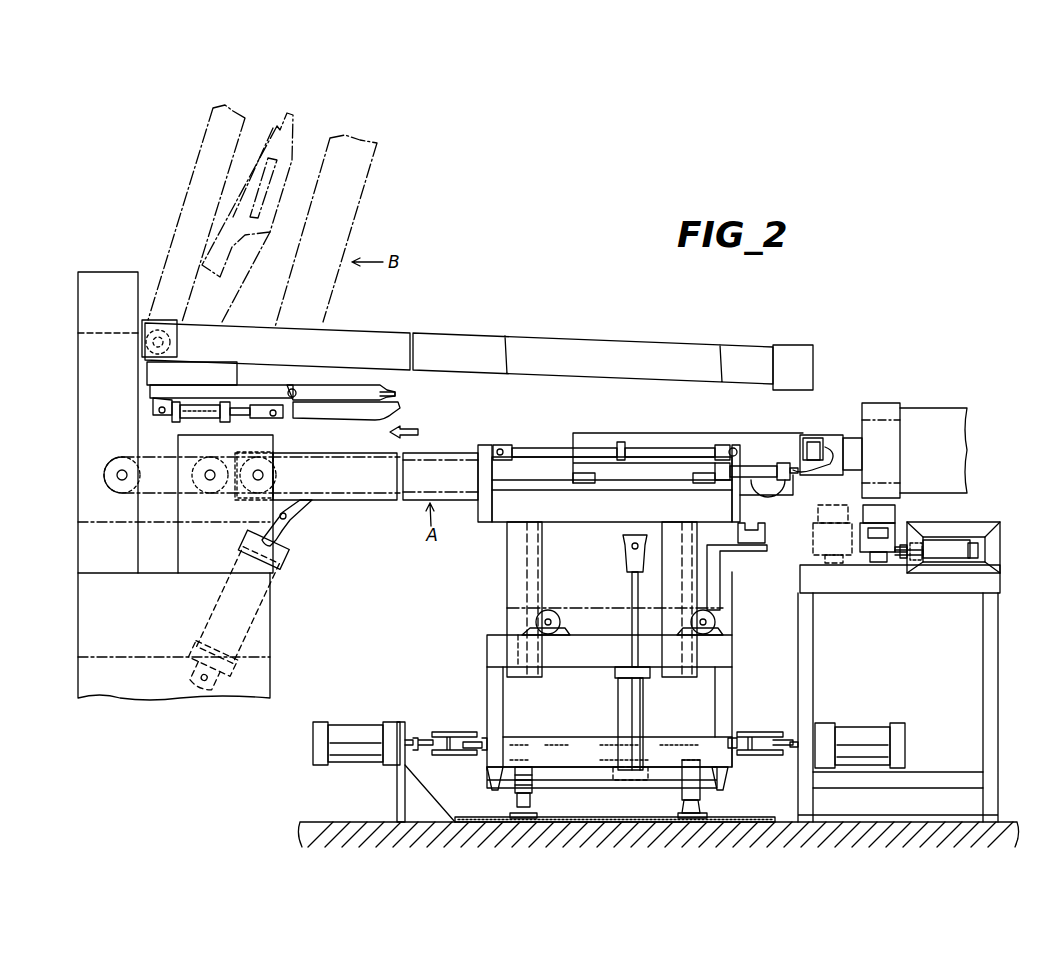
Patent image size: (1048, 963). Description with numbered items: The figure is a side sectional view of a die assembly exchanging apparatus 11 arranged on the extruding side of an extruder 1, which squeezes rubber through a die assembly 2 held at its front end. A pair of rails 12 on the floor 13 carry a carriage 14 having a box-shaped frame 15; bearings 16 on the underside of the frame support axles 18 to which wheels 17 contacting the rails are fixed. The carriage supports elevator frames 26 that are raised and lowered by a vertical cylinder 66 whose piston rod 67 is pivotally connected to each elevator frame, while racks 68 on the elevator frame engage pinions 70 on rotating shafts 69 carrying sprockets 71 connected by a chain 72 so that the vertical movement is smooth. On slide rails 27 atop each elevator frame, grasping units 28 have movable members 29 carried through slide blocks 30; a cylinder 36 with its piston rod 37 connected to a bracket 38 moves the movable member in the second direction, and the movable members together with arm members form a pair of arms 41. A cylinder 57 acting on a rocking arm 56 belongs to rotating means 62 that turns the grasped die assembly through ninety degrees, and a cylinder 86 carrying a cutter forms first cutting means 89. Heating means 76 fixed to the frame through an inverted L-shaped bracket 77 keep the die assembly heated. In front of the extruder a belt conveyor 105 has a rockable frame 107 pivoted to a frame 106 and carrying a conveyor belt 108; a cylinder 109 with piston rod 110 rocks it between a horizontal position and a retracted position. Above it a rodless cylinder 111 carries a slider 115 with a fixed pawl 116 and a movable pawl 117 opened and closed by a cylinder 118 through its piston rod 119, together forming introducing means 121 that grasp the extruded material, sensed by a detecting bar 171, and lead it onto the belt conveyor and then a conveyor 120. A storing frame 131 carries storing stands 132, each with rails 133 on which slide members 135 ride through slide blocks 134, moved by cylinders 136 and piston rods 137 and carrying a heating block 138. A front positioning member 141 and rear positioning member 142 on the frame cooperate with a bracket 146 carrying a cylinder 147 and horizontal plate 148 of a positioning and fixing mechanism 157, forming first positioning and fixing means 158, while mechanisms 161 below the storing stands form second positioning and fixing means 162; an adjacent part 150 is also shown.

The extruder 1 is at (933, 420).
The die assembly 2 is at (852, 437).
The die assembly exchanging apparatus 11 is at (497, 588).
The rails 12 is at (535, 804).
The floor 13 is at (773, 822).
The carriage 14 is at (733, 681).
The frame 15 is at (727, 697).
The bearings 16 is at (729, 783).
The wheels 17 is at (682, 796).
The axles 18 is at (583, 789).
The elevator frame 26 is at (513, 559).
The slide rails 27 is at (522, 485).
The grasping units 28 is at (785, 430).
The movable members 29 is at (690, 433).
The slide blocks 30 is at (585, 484).
The cylinder 36 is at (540, 447).
The piston rod 37 is at (650, 447).
The bracket 38 is at (745, 460).
The arms 41 is at (599, 424).
The rocking arm 56 is at (815, 470).
The cylinder 57 is at (760, 463).
The rotating means 62 is at (778, 493).
The cylinder 66 is at (622, 713).
The piston rod 67 is at (631, 587).
The racks 68 is at (538, 572).
The rotating shafts 69 is at (562, 622).
The pinion 70 is at (549, 610).
The sprockets 71 is at (555, 635).
The chain 72 is at (600, 607).
The heating means 76 is at (775, 541).
The inverted L-shaped bracket 77 is at (755, 552).
The cylinder 86 is at (815, 437).
The first cutting means 89 is at (835, 415).
The belt conveyor 105 is at (357, 503).
The frame 106 is at (270, 648).
The rockable frame 107 is at (445, 452).
The conveyor belt 108 is at (328, 497).
The cylinder 109 is at (268, 576).
The piston rod 110 is at (286, 532).
The rodless cylinder 111 is at (520, 338).
The slider 115 is at (208, 376).
The fixed pawl 116 is at (334, 384).
The movable pawl 117 is at (330, 412).
The cylinder 118 is at (166, 420).
The piston rod 119 is at (265, 420).
The conveyor 120 is at (143, 495).
The introducing means 121 is at (370, 328).
The storing frame 131 is at (990, 705).
The storing stands 132 is at (963, 523).
The rails 133 is at (847, 580).
The slide blocks 134 is at (875, 568).
The slide members 135 is at (870, 540).
The cylinders 136 is at (955, 565).
The piston rod 137 is at (885, 563).
The heating block 138 is at (895, 521).
The front positioning member 141 is at (470, 756).
The rear positioning member 142 is at (753, 732).
The bracket 146 is at (437, 807).
The cylinder 147 is at (338, 730).
The horizontal plate 148 is at (455, 731).
The post 150 is at (408, 722).
The positioning and fixing mechanism 157 is at (378, 711).
The first positioning and fixing means 158 is at (436, 702).
The positioning and fixing mechanisms 161 is at (866, 716).
The second positioning and fixing means 162 is at (819, 705).
The detecting bar 171 is at (397, 393).